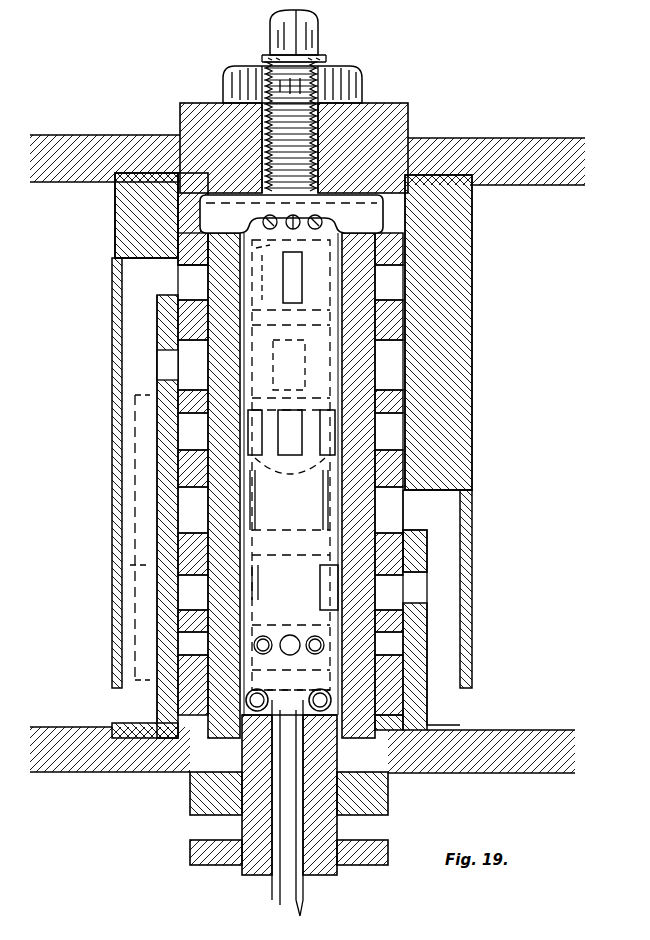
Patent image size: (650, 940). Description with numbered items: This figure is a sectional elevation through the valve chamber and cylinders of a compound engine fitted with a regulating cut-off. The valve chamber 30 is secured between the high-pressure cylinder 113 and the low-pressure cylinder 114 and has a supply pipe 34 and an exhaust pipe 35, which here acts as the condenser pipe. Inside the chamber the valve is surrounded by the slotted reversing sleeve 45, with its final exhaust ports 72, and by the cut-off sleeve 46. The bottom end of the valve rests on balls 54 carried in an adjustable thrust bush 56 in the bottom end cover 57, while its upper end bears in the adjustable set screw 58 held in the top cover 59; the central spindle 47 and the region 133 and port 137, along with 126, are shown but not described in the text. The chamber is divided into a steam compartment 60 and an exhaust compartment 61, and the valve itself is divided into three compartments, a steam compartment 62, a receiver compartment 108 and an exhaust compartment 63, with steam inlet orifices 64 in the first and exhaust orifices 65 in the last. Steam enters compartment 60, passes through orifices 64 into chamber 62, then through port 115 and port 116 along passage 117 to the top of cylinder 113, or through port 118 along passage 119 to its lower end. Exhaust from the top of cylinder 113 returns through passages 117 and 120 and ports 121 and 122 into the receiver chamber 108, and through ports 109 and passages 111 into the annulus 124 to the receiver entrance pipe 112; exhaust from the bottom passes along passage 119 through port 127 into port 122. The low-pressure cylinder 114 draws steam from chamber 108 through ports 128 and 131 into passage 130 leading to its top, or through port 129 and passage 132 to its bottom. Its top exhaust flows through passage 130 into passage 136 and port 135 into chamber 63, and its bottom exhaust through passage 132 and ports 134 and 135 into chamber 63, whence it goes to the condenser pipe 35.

The valve chamber 30 is at (406, 184).
The supply pipe 34 is at (263, 272).
The exhaust pipe 35 is at (292, 770).
The reversing sleeve 45 is at (389, 510).
The cut-off sleeve 46 is at (206, 265).
The wire 47 is at (292, 893).
The balls 54 is at (262, 700).
The adjustable thrust bush 56 is at (248, 866).
The bottom end cover 57 is at (215, 785).
The adjustable set screw 58 is at (318, 58).
The top cover 59 is at (372, 118).
The steam compartment 60 is at (291, 214).
The exhaust compartment 61 is at (290, 643).
The steam compartment of the valve 62 is at (291, 465).
The exhaust compartment of the valve 63 is at (291, 594).
The steam inlet orifices 64 is at (335, 222).
The exhaust orifices 65 is at (290, 645).
The final exhaust ports 72 is at (205, 648).
The receiver compartment 108 is at (291, 537).
The ports 109 is at (291, 432).
The passages 111 is at (144, 537).
The pipe 112 is at (290, 477).
The high-pressure cylinder 113 is at (92, 472).
The low-pressure cylinder 114 is at (506, 589).
The port 115 is at (294, 273).
The port 116 is at (391, 282).
The passage 117 is at (135, 195).
The port 118 is at (194, 282).
The passage 119 is at (134, 490).
The passage 120 is at (420, 308).
The port 121 is at (391, 365).
The port 122 is at (290, 365).
The annulus 124 is at (182, 428).
The port 126 is at (167, 366).
The port 127 is at (194, 365).
The port 128 is at (247, 513).
The port 129 is at (194, 510).
The passage 130 is at (474, 195).
The port 131 is at (390, 510).
The passage 132 is at (432, 627).
The passage 133 is at (142, 578).
The port 134 is at (194, 592).
The port of the valve 135 is at (326, 591).
The passage 136 is at (431, 546).
The port 137 is at (390, 592).